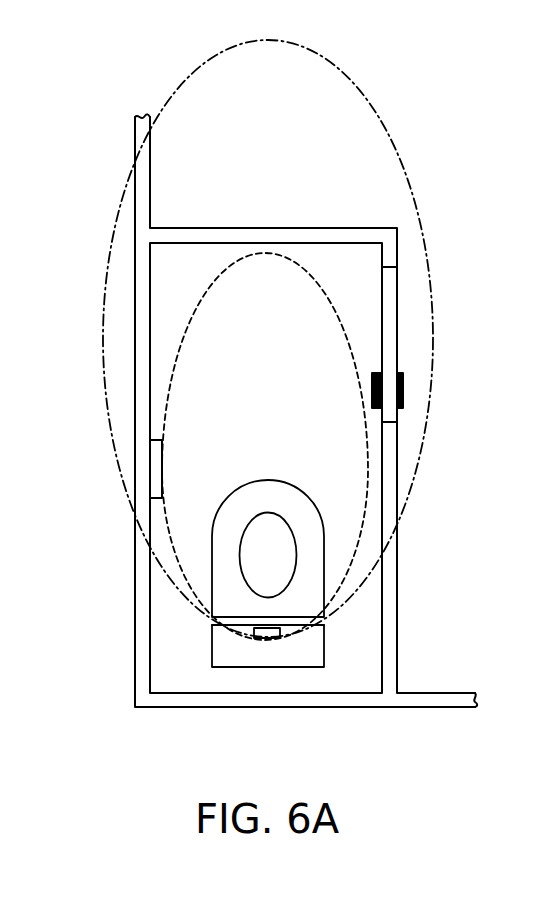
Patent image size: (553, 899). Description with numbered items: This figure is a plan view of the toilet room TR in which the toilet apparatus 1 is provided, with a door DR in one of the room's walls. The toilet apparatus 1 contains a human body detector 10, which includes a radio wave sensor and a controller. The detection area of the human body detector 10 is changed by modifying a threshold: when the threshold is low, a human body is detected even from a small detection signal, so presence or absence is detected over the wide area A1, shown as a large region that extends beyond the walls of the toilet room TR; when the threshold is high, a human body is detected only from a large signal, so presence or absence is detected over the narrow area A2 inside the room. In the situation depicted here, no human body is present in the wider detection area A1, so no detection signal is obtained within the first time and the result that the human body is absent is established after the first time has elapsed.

The toilet apparatus 1 is at (268, 668).
The human body detector 10 is at (267, 633).
The wide detection area A1 is at (373, 110).
The narrow detection area A2 is at (335, 297).
The door DR is at (387, 348).
The toilet room TR is at (150, 670).